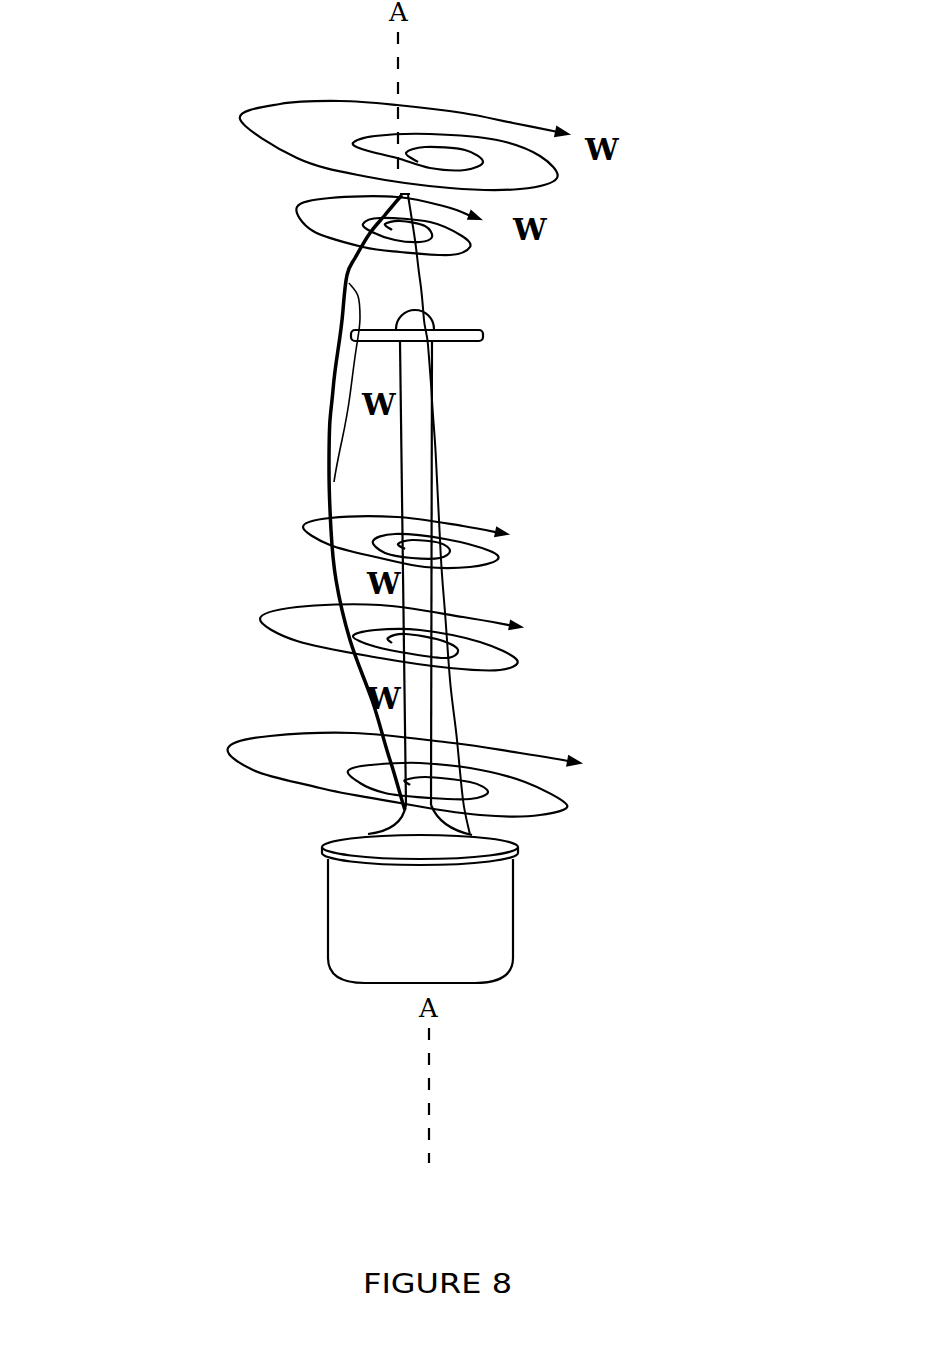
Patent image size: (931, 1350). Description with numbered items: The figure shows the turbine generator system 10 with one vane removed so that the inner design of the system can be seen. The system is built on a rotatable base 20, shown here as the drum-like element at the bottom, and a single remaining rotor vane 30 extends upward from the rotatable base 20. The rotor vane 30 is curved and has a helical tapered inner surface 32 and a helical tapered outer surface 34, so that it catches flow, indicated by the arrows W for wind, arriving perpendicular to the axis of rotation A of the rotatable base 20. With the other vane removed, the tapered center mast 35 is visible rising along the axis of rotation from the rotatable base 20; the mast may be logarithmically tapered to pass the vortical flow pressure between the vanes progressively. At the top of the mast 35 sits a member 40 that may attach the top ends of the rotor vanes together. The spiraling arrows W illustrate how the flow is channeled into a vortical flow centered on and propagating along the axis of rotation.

The turbine generator system 10 is at (351, 485).
The rotatable base 20 is at (480, 842).
The rotor vane 30 is at (373, 452).
The helical tapered inner surface 32 is at (445, 580).
The helical tapered outer surface 34 is at (330, 412).
The center mast 35 is at (415, 371).
The member 40 is at (392, 336).